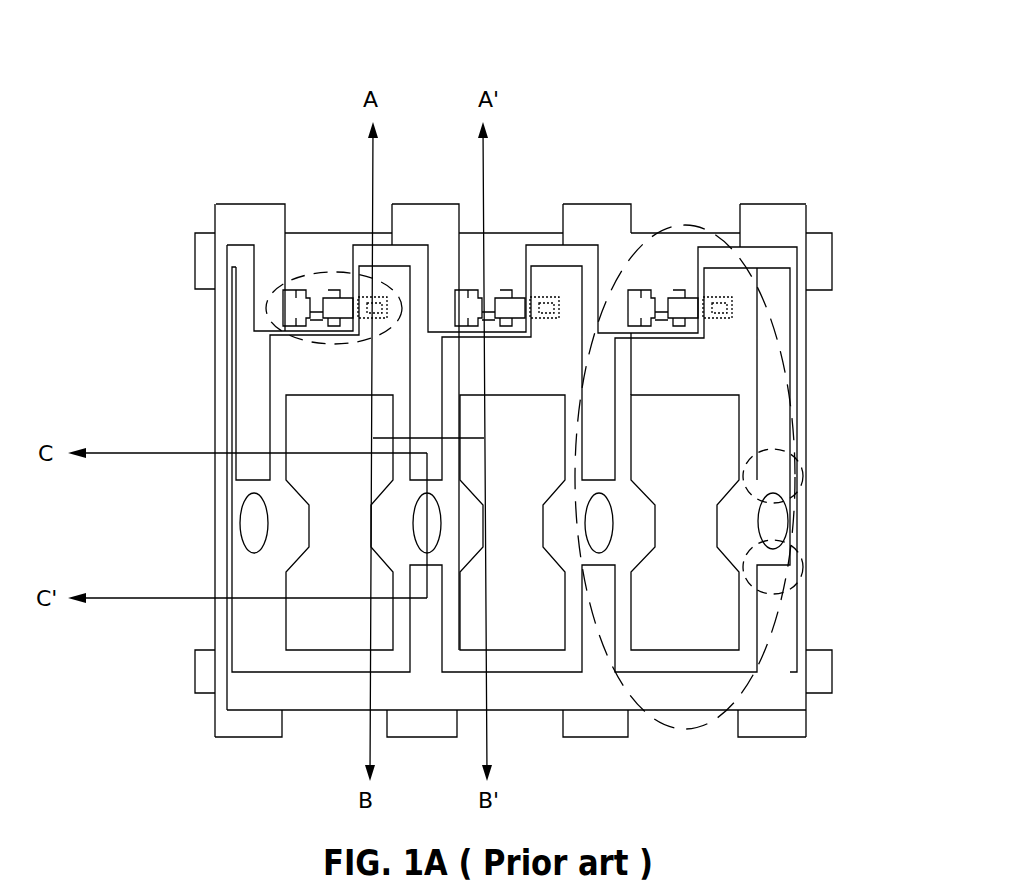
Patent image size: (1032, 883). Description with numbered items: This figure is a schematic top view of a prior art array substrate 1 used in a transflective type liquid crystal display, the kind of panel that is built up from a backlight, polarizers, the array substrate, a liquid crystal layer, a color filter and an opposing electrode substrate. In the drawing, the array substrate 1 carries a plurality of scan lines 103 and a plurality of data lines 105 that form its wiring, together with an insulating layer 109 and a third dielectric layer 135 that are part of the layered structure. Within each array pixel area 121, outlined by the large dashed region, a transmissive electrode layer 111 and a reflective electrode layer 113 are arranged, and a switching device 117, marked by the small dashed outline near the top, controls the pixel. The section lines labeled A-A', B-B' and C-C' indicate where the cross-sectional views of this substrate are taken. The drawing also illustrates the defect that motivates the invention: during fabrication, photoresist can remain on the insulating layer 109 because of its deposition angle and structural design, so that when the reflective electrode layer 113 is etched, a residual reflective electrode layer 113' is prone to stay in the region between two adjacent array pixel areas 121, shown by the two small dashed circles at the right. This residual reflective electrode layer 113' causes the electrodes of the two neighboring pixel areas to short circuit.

The array substrate 1 is at (789, 118).
The scan lines 103 is at (820, 260).
The data lines 105 is at (778, 222).
The insulating layer 109 is at (366, 252).
The transmissive electrode layers 111 is at (333, 628).
The reflective electrode layers 113 is at (475, 469).
The residual reflective electrode layer 113' is at (832, 552).
The switching devices 117 is at (368, 279).
The array pixel areas 121 is at (688, 733).
The third dielectric layer 135 is at (253, 513).